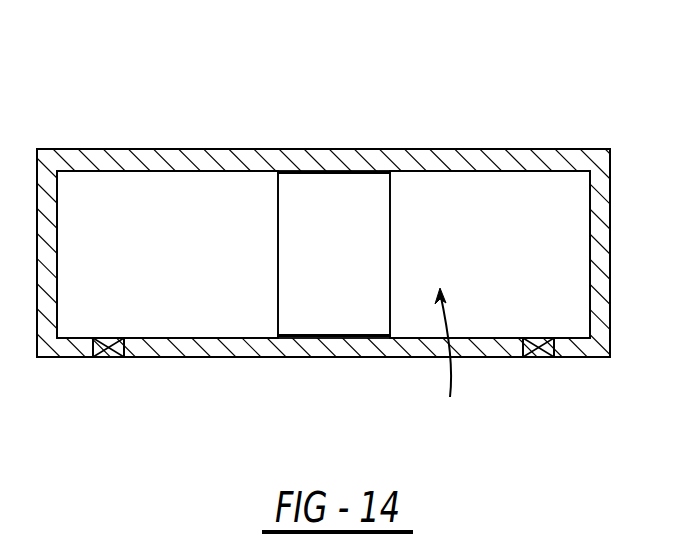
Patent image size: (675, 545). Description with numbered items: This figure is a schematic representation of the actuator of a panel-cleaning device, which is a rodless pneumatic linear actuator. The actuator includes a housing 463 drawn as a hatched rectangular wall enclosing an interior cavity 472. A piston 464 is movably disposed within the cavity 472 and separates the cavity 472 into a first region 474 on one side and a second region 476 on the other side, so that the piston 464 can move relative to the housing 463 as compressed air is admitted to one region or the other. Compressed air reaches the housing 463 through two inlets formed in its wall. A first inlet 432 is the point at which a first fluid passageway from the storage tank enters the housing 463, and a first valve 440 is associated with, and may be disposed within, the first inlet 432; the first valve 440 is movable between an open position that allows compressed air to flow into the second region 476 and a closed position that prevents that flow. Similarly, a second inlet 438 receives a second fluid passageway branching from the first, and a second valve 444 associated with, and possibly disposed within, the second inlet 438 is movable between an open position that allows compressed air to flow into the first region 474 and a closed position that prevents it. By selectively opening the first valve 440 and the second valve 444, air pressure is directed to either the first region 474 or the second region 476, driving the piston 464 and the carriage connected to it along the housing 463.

The housing 463 is at (248, 155).
The first region 474 is at (175, 200).
The second region 476 is at (435, 203).
The piston 464 is at (323, 322).
The second valve 444 is at (112, 338).
The second inlet 438 is at (112, 358).
The first valve 440 is at (535, 338).
The first inlet 432 is at (538, 358).
The cavity 472 is at (452, 360).